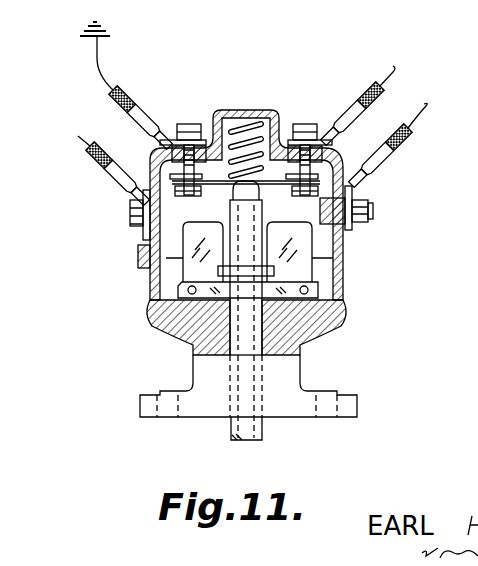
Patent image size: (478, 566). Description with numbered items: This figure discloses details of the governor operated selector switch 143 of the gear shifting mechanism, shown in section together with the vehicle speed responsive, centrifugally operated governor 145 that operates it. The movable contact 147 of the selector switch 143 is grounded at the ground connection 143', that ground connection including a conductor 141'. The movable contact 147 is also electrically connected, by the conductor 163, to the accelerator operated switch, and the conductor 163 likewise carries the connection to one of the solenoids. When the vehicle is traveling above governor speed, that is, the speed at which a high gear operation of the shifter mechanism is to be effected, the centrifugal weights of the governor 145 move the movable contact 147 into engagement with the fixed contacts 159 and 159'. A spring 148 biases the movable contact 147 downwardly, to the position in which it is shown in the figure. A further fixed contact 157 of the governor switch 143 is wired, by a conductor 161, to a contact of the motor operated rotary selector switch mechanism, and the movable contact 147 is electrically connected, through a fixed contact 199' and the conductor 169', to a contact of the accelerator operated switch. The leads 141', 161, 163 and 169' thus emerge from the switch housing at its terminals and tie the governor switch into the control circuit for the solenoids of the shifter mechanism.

The conductor 141' is at (151, 105).
The ground connection 143' is at (124, 47).
The selector switch 143 is at (195, 268).
The governor 145 is at (307, 313).
The movable contact 147 is at (277, 142).
The spring 148 is at (238, 122).
The fixed contact 157 is at (352, 188).
The fixed contact 159 is at (339, 160).
The fixed contact 159' is at (140, 147).
The conductor 161 is at (430, 118).
The conductor 163 is at (392, 66).
The conductor 169' is at (87, 170).
The fixed contact 199' is at (106, 239).